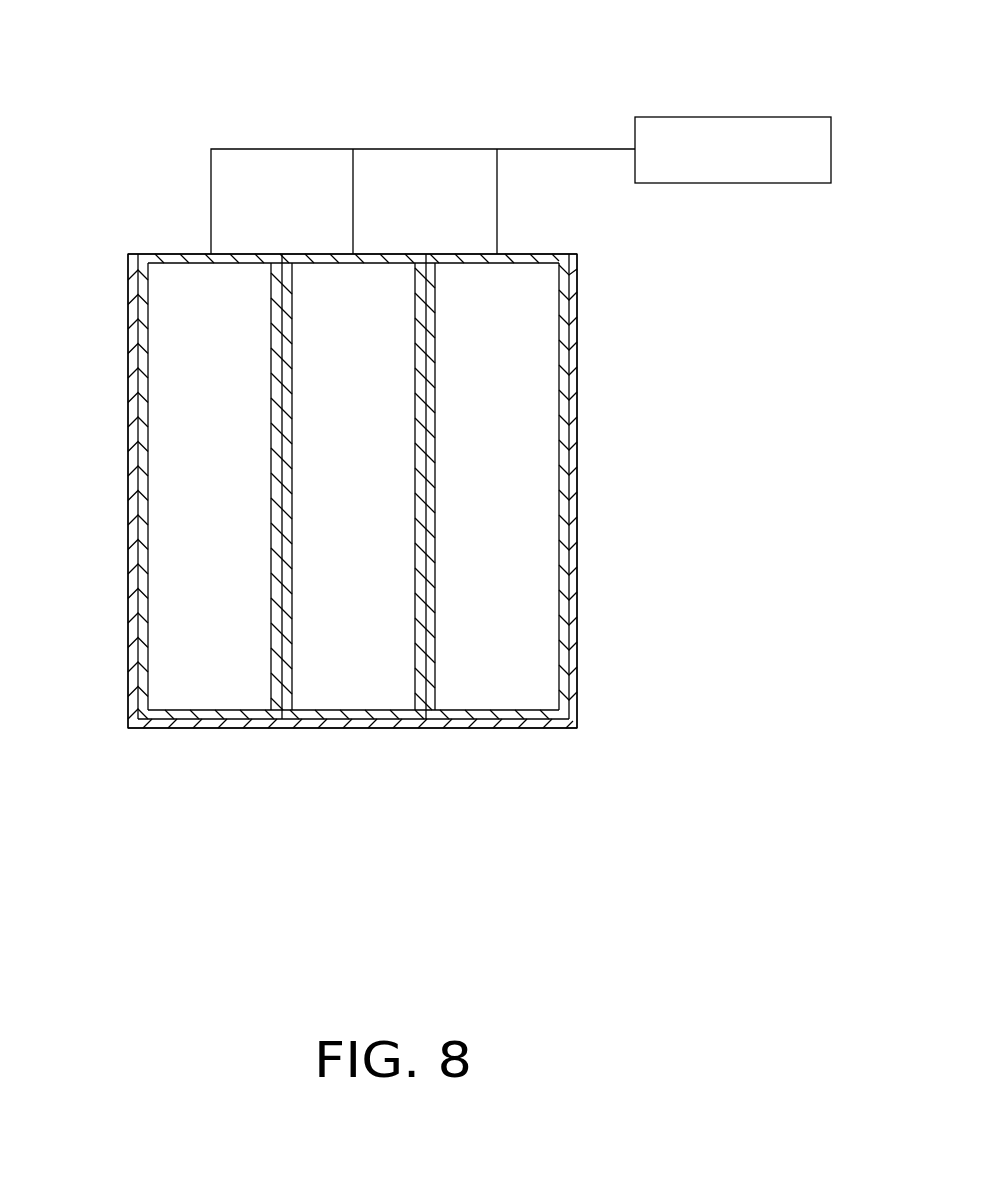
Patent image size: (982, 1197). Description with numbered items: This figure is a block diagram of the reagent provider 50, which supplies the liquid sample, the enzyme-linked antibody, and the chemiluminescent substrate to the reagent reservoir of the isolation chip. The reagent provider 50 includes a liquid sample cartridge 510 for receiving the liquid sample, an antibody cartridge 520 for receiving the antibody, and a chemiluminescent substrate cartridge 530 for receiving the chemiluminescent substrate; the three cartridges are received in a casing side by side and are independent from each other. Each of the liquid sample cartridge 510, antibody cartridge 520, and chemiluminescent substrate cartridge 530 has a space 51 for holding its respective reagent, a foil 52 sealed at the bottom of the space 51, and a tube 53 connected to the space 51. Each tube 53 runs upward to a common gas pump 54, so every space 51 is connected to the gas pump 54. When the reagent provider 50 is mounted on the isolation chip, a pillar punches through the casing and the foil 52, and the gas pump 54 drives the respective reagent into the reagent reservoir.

The reagent provider 50 is at (286, 37).
The space 51 is at (180, 473).
The foil 52 is at (553, 723).
The tube 53 is at (403, 149).
The gas pump 54 is at (733, 117).
The liquid sample cartridge 510 is at (137, 294).
The antibody cartridge 520 is at (420, 543).
The chemiluminescent substrate cartridge 530 is at (560, 408).